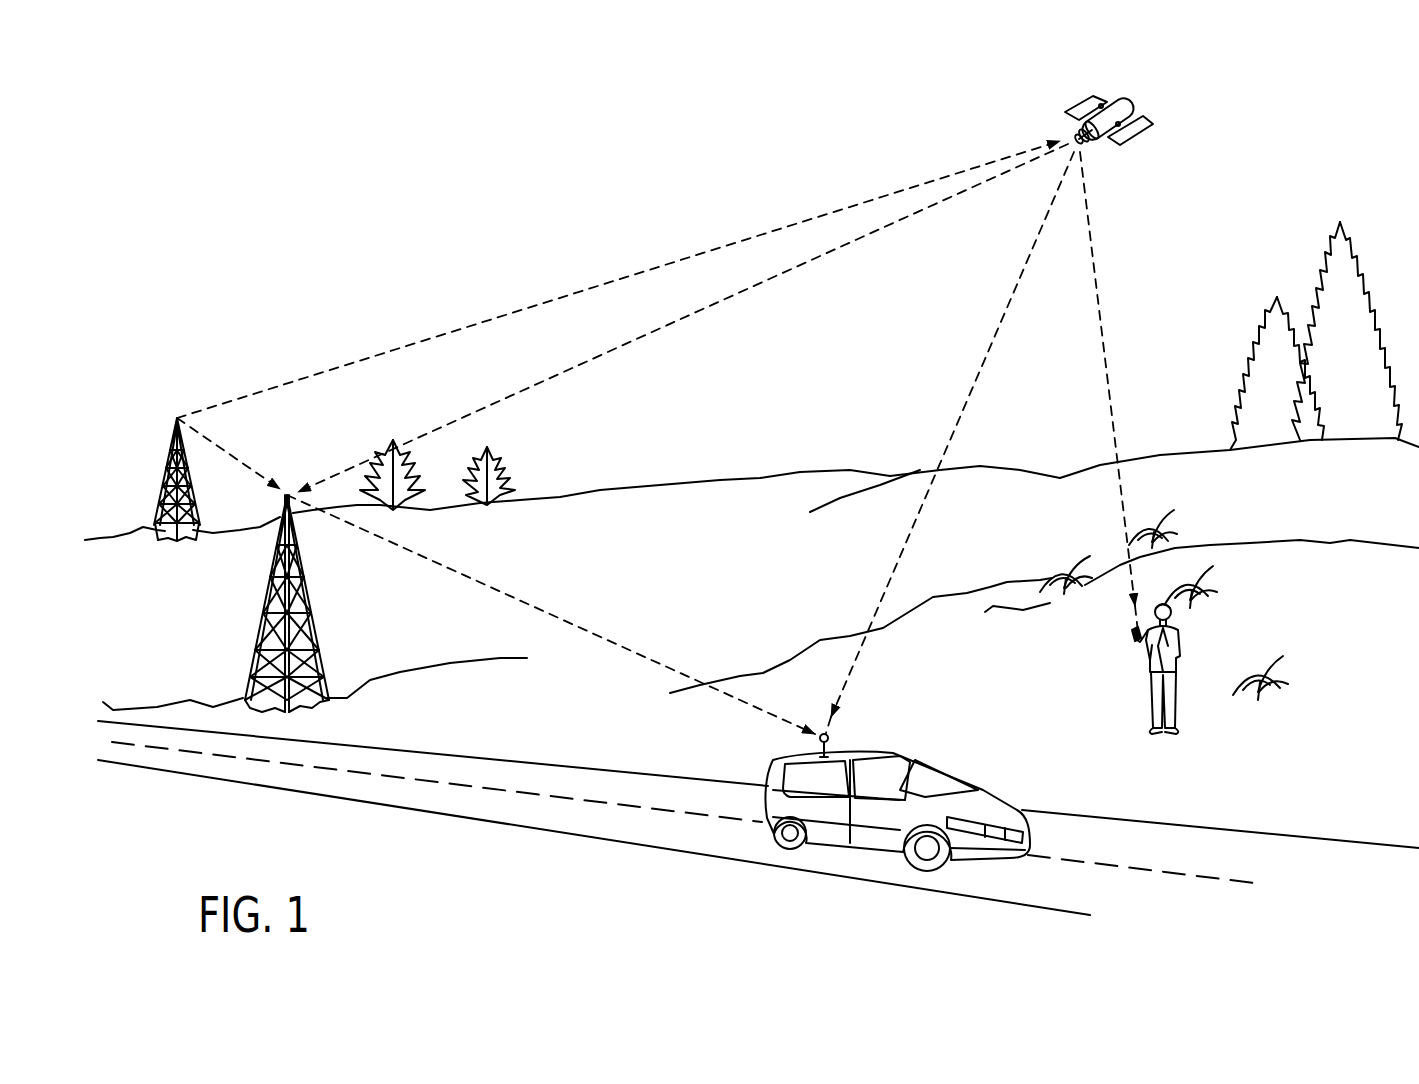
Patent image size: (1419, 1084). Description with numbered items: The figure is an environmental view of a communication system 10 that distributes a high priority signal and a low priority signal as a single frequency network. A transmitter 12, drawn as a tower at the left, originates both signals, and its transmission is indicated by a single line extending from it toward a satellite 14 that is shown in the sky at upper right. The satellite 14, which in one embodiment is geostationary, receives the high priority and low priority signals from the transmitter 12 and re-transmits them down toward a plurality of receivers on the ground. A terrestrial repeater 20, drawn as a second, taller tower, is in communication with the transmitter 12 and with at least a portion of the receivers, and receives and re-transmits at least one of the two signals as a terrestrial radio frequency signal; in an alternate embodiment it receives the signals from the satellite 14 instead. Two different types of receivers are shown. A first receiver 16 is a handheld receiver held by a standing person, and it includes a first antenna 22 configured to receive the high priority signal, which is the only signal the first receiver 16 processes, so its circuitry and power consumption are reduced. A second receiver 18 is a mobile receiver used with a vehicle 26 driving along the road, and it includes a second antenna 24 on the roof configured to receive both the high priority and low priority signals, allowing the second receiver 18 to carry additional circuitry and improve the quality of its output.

The communication system 10 is at (428, 238).
The transmitter 12 is at (158, 490).
The satellite 14 is at (1096, 108).
The first receiver 16 is at (1134, 640).
The second receiver 18 is at (818, 740).
The terrestrial repeater 20 is at (262, 620).
The first antenna 22 is at (1136, 634).
The second antenna 24 is at (838, 741).
The vehicle 26 is at (957, 765).